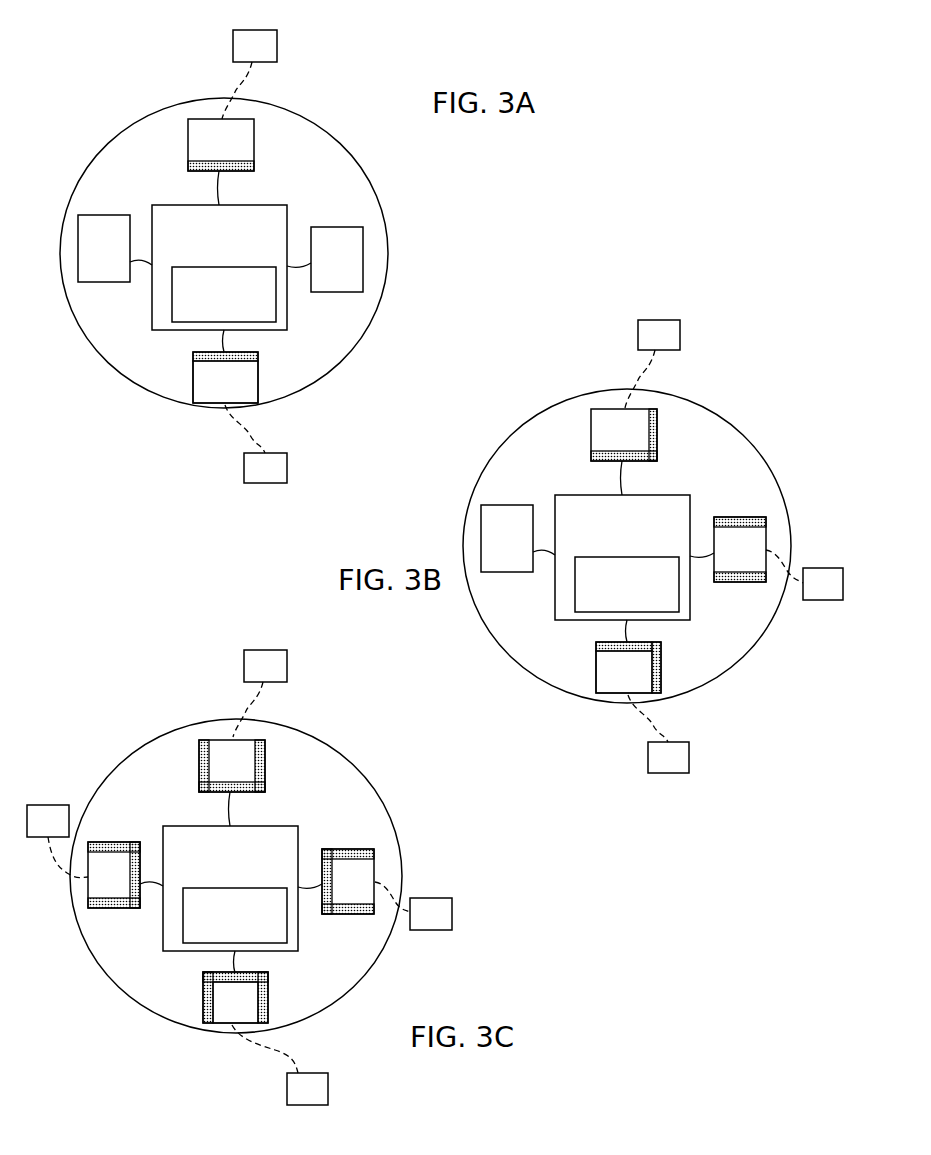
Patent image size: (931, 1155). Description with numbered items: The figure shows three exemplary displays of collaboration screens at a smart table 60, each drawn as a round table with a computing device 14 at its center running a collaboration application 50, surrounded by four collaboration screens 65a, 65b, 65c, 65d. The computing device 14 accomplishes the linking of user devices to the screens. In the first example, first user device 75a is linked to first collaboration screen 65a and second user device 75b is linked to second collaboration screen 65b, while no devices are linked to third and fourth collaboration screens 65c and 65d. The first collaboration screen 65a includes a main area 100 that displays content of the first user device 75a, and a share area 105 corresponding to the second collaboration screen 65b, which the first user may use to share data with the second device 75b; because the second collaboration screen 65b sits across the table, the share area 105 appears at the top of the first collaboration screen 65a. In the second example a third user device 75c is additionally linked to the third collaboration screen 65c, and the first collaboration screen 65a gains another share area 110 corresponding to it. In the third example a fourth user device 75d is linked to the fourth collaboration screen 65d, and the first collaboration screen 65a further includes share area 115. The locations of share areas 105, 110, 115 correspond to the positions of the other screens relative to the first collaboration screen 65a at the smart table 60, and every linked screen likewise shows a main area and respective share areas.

In FIG. 3A, the computing device 14 is at (220, 261).
In FIG. 3B, the computing device 14 is at (623, 551).
In FIG. 3C, the computing device 14 is at (231, 882).
In FIG. 3A, the collaboration application 50 is at (224, 294).
In FIG. 3B, the collaboration application 50 is at (627, 584).
In FIG. 3C, the collaboration application 50 is at (235, 915).
In FIG. 3A, the smart table 60 is at (128, 383).
In FIG. 3B, the smart table 60 is at (627, 558).
In FIG. 3C, the smart table 60 is at (236, 888).
In FIG. 3A, the first collaboration screen 65a is at (235, 411).
In FIG. 3B, the first collaboration screen 65a is at (639, 692).
In FIG. 3C, the first collaboration screen 65a is at (249, 1022).
In FIG. 3A, the second collaboration screen 65b is at (257, 140).
In FIG. 3B, the second collaboration screen 65b is at (675, 419).
In FIG. 3C, the second collaboration screen 65b is at (283, 749).
In FIG. 3A, the third collaboration screen 65c is at (357, 225).
In FIG. 3B, the third collaboration screen 65c is at (776, 511).
In FIG. 3C, the third collaboration screen 65c is at (385, 842).
In FIG. 3A, the fourth collaboration screen 65d is at (80, 283).
In FIG. 3B, the fourth collaboration screen 65d is at (480, 575).
In FIG. 3C, the fourth collaboration screen 65d is at (86, 909).
In FIG. 3A, the first user device 75a is at (256, 444).
In FIG. 3B, the first user device 75a is at (658, 734).
In FIG. 3C, the first user device 75a is at (280, 1065).
In FIG. 3A, the second user device 75b is at (249, 74).
In FIG. 3B, the second user device 75b is at (652, 364).
In FIG. 3C, the second user device 75b is at (260, 693).
In FIG. 3B, the third user device 75c is at (804, 575).
In FIG. 3C, the third user device 75c is at (413, 906).
In FIG. 3C, the fourth user device 75d is at (57, 841).
In FIG. 3A, the main area 100 is at (209, 397).
In FIG. 3B, the main area 100 is at (612, 705).
In FIG. 3C, the main area 100 is at (218, 1036).
In FIG. 3A, the share area 105 is at (200, 362).
In FIG. 3B, the share area 105 is at (591, 684).
In FIG. 3C, the share area 105 is at (208, 973).
In FIG. 3B, the share area 110 is at (696, 659).
In FIG. 3C, the share area 110 is at (302, 988).
In FIG. 3C, the share area 115 is at (177, 1015).